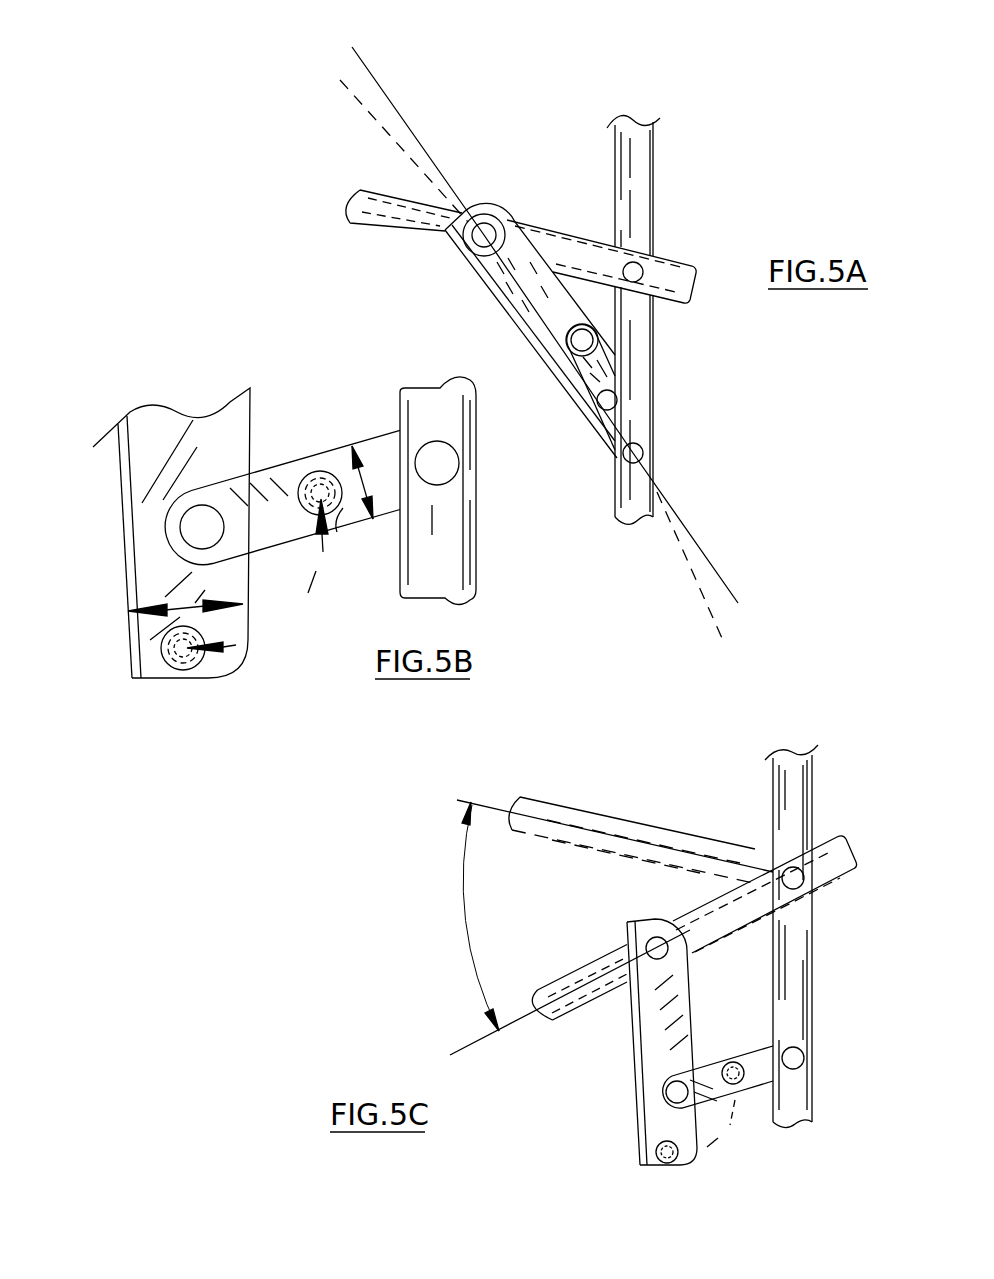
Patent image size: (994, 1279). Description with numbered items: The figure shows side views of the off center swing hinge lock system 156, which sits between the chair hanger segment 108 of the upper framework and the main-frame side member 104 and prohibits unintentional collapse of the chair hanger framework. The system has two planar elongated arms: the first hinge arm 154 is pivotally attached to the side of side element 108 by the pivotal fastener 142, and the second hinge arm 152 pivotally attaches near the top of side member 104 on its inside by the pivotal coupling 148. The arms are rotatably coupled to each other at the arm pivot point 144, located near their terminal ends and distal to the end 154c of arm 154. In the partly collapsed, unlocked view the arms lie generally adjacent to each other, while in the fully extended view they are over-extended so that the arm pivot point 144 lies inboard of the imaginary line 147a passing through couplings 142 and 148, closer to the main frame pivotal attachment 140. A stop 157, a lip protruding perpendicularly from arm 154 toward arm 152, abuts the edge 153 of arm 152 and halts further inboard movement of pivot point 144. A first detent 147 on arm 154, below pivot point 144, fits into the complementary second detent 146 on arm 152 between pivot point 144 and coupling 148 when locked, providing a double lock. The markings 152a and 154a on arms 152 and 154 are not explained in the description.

In FIG. 5A, the main-frame side member 104 is at (653, 157).
In FIG. 5B, the main-frame side member 104 is at (468, 491).
In FIG. 5C, the main-frame side member 104 is at (813, 980).
In FIG. 5A, the chair hanger segment 108 is at (383, 193).
In FIG. 5C, the chair hanger segment 108 is at (570, 970).
In FIG. 5A, the main frame pivotal attachment 140 is at (663, 266).
In FIG. 5C, the main frame pivotal attachment 140 is at (810, 893).
In FIG. 5A, the pivotal fastener 142 is at (503, 227).
In FIG. 5C, the pivotal fastener 142 is at (653, 950).
In FIG. 5B, the arm pivot point 144 is at (177, 535).
In FIG. 5C, the arm pivot point 144 is at (663, 1100).
In FIG. 5B, the second detent 146 is at (300, 487).
In FIG. 5C, the second detent 146 is at (727, 1060).
In FIG. 5B, the first detent 147 is at (195, 670).
In FIG. 5C, the first detent 147 is at (660, 1147).
In FIG. 5A, the imaginary line 147a is at (388, 93).
In FIG. 5A, the pivotal coupling 148 is at (646, 441).
In FIG. 5B, the pivotal coupling 148 is at (453, 483).
In FIG. 5C, the pivotal coupling 148 is at (800, 1070).
In FIG. 5A, the second hinge arm 152 is at (565, 398).
In FIG. 5B, the second hinge arm 152 is at (373, 435).
In FIG. 5C, the second hinge arm 152 is at (710, 1060).
In FIG. 5B, the link width 152a is at (333, 500).
In FIG. 5A, the edge 153 is at (607, 442).
In FIG. 5B, the edge 153 is at (345, 528).
In FIG. 5C, the edge 153 is at (748, 1093).
In FIG. 5A, the first hinge arm 154 is at (487, 292).
In FIG. 5B, the first hinge arm 154 is at (117, 490).
In FIG. 5C, the first hinge arm 154 is at (637, 1072).
In FIG. 5B, the bracket width 154a is at (173, 597).
In FIG. 5B, the end 154c is at (183, 681).
In FIG. 5C, the end 154c is at (663, 1167).
In FIG. 5A, the off center swing hinge lock system 156 is at (585, 196).
In FIG. 5B, the off center swing hinge lock system 156 is at (298, 590).
In FIG. 5C, the off center swing hinge lock system 156 is at (758, 979).
In FIG. 5A, the stop 157 is at (517, 320).
In FIG. 5B, the stop 157 is at (148, 665).
In FIG. 5C, the stop 157 is at (640, 1030).